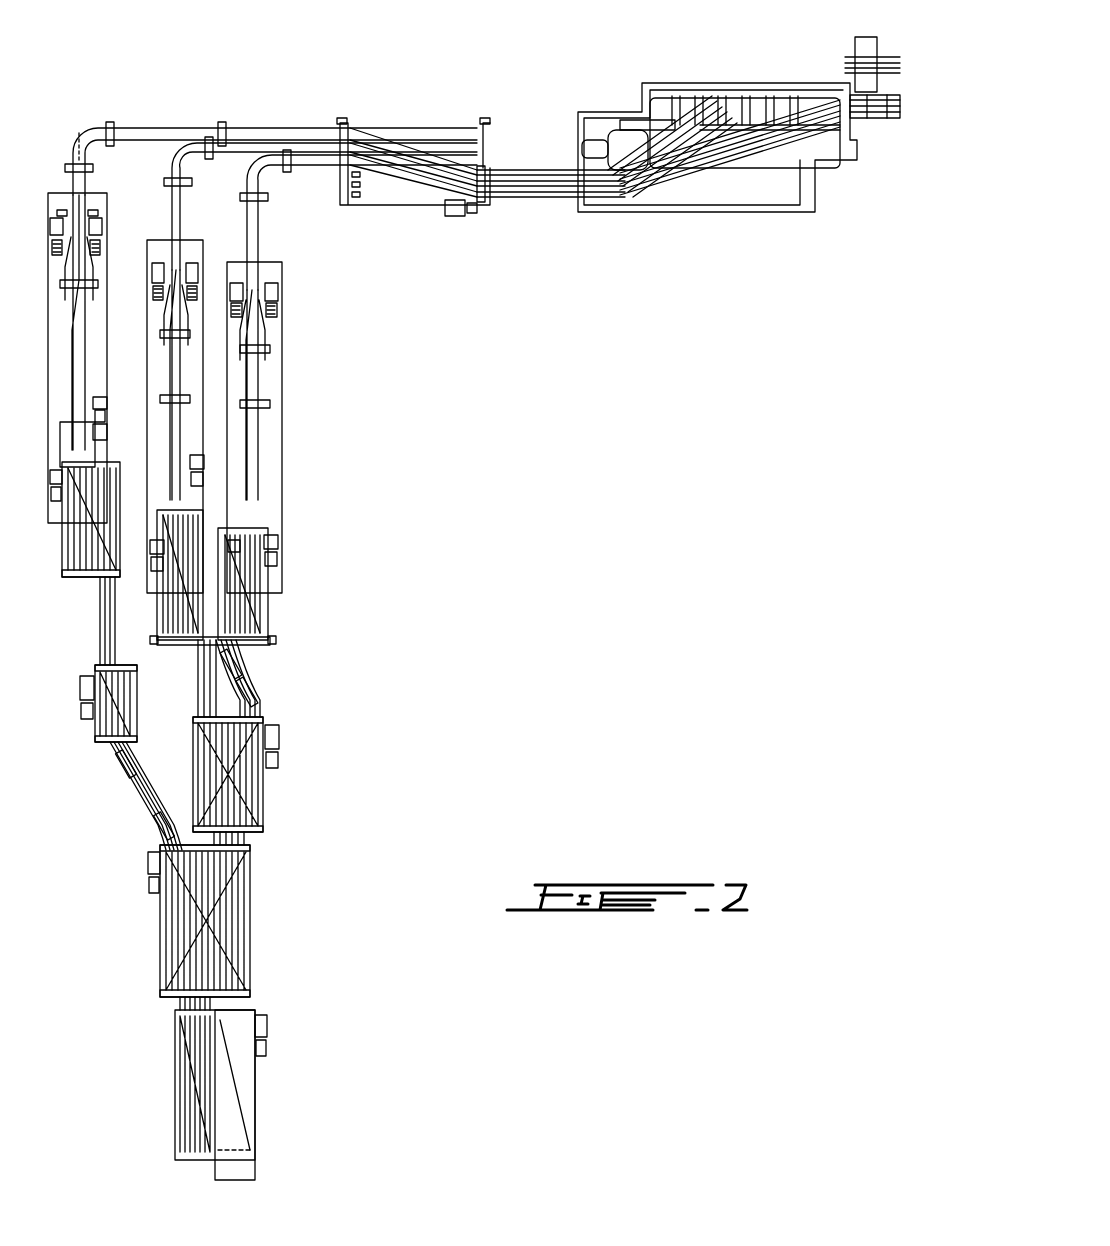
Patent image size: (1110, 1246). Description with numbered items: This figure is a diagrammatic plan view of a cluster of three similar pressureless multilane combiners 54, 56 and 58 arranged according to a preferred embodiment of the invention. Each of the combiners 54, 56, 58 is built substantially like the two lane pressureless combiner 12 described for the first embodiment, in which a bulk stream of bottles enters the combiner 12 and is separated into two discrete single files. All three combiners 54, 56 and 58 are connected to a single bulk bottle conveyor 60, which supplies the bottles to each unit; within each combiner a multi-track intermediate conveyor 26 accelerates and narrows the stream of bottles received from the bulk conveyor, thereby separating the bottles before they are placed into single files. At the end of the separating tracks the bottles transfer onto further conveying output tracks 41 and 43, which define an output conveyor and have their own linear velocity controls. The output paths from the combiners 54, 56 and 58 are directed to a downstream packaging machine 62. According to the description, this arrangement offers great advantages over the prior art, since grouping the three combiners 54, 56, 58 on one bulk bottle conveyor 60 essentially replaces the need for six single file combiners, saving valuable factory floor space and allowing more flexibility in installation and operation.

The two lane pressureless combiner 12 is at (292, 792).
The multi-track intermediate conveyor 26 is at (125, 455).
The output track 41 is at (88, 133).
The output track 43 is at (155, 133).
The combiner 54 is at (97, 200).
The combiner 56 is at (195, 247).
The combiner 58 is at (275, 393).
The single bulk bottle conveyor 60 is at (213, 927).
The downstream packaging machine 62 is at (640, 195).